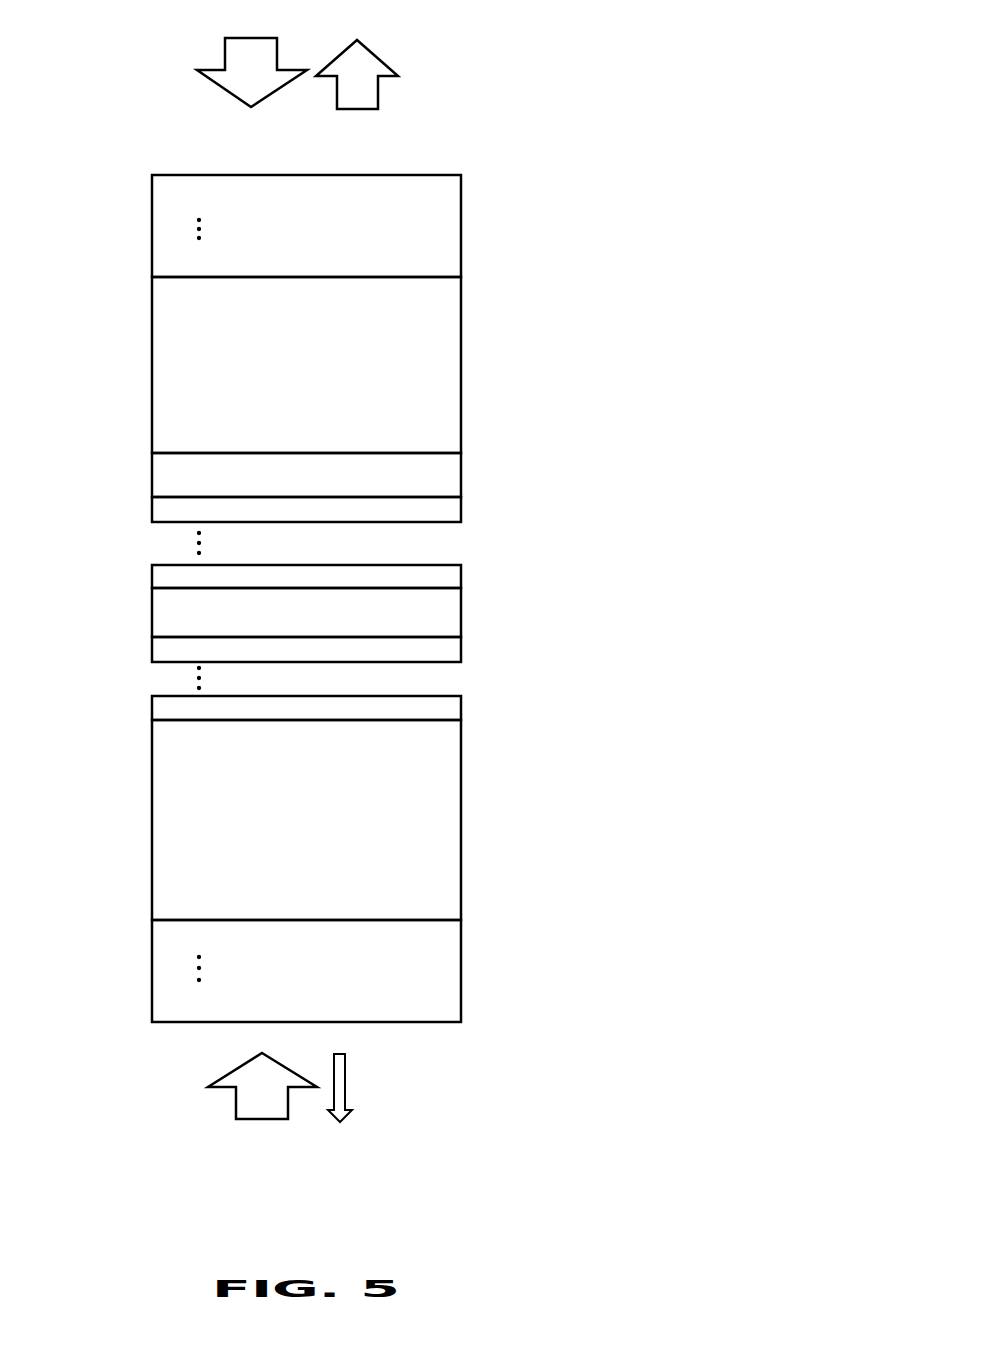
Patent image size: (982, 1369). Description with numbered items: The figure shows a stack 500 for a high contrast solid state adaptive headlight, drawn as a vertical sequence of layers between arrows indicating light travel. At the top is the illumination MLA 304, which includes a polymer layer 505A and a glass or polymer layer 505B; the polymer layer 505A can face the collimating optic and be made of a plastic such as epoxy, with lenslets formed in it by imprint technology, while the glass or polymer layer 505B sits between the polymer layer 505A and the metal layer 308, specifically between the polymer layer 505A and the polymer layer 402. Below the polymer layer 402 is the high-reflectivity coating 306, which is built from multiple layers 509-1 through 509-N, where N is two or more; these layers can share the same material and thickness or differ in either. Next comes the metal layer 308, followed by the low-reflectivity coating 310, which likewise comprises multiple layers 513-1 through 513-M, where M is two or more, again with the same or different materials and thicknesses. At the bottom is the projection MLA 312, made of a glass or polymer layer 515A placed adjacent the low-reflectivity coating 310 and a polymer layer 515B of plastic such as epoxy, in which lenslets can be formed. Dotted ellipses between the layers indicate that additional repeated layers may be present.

The stack 500 is at (657, 89).
The illumination MLA 304 is at (480, 175).
The polymer layer 505A is at (306, 226).
The glass or polymer layer 505B is at (306, 365).
The polymer layer 402 is at (306, 475).
The high-reflectivity coating 306 is at (480, 496).
The layer 509-1 is at (152, 507).
The layer 509-N is at (152, 577).
The metal layer 308 is at (306, 612).
The low-reflectivity coating 310 is at (480, 637).
The layer 513-1 is at (152, 652).
The layer 513-M is at (152, 709).
The projection MLA 312 is at (480, 720).
The glass or polymer layer 515A is at (306, 820).
The polymer layer 515B is at (306, 971).